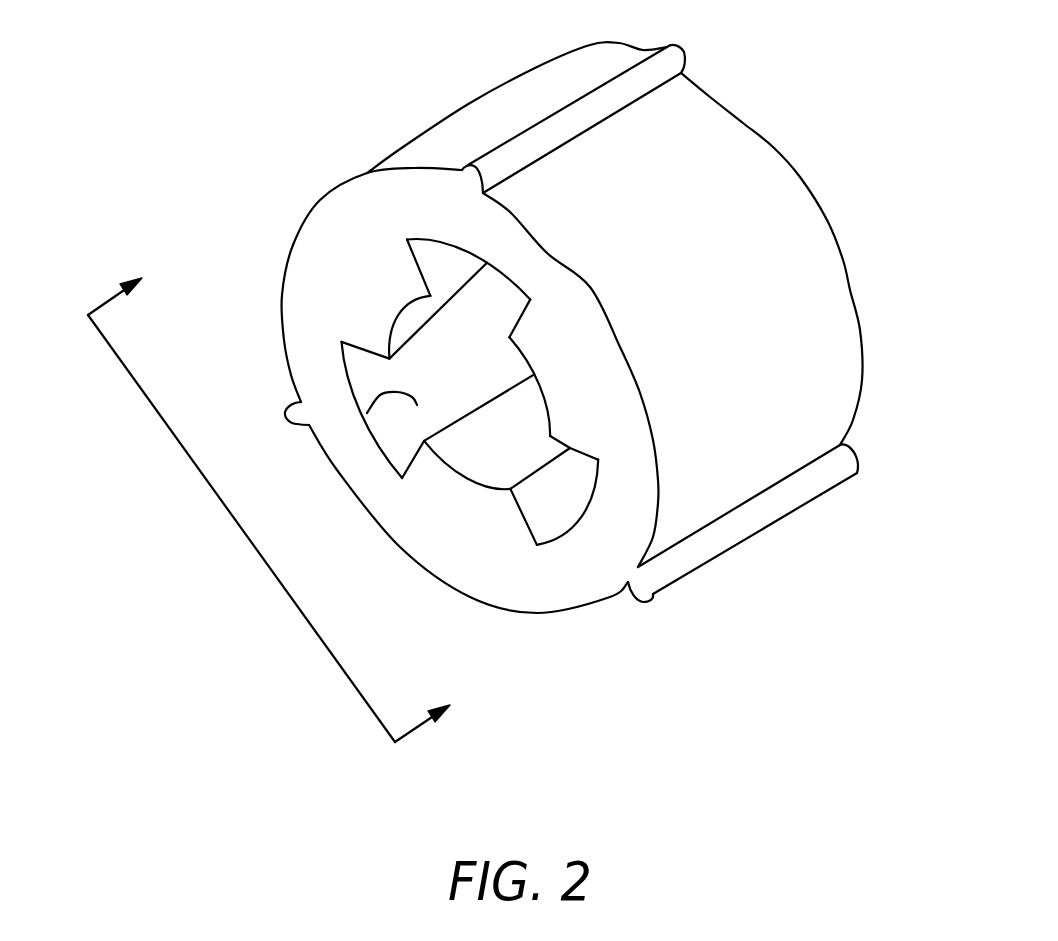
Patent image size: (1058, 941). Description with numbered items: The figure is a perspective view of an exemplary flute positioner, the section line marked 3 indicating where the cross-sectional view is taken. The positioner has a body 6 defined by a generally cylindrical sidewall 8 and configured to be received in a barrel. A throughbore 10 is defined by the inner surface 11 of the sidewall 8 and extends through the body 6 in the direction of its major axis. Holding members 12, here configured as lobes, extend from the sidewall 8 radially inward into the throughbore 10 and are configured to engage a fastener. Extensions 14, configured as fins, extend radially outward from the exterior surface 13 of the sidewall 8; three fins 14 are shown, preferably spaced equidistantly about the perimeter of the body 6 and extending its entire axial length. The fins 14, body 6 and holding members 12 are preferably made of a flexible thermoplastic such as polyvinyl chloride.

The body 6 is at (566, 337).
The sidewall 8 is at (587, 563).
The throughbore 10 is at (554, 381).
The inner surface 11 is at (367, 415).
The holding members 12 is at (387, 310).
The exterior surface 13 is at (688, 220).
The extensions 14 is at (667, 47).
The section line 3- 3 is at (273, 506).